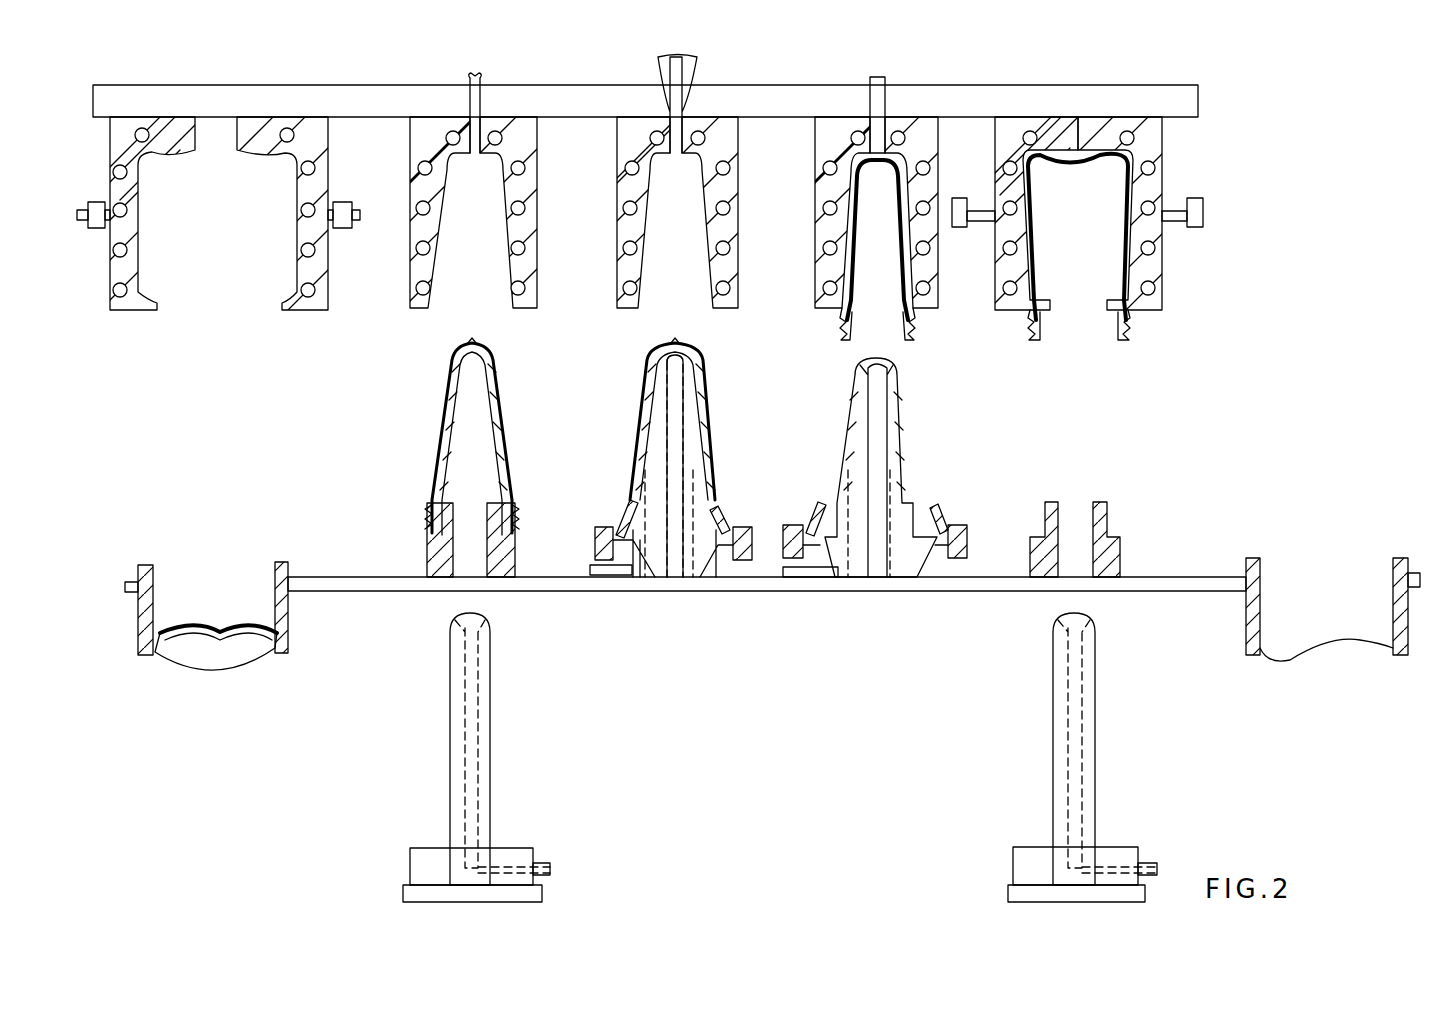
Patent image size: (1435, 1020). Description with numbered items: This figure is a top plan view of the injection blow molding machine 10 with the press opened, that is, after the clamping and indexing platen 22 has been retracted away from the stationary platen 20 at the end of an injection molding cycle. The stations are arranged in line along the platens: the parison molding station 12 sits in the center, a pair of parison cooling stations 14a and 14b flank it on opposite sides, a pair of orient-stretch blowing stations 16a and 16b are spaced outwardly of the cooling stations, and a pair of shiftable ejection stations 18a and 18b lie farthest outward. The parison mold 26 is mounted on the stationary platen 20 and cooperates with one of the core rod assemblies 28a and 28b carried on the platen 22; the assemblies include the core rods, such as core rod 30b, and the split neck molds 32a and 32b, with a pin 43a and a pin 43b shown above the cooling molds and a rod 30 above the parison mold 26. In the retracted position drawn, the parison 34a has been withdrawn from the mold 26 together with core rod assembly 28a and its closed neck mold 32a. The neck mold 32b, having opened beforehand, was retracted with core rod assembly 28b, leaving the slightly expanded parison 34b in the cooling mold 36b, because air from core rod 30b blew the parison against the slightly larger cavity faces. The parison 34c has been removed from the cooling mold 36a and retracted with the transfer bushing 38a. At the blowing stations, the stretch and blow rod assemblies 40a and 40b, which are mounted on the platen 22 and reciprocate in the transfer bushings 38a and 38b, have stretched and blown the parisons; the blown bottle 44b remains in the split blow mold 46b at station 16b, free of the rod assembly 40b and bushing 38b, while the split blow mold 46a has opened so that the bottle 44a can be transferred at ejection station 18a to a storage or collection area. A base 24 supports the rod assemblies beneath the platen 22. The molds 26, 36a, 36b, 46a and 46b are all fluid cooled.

The injection blow molding machine 10 is at (838, 74).
The parison molding station 12 is at (730, 82).
The parison cooling station 14a is at (466, 84).
The parison cooling station 14b is at (940, 85).
The orient-stretch blowing station 16a is at (217, 84).
The orient-stretch blowing station 16b is at (1098, 86).
The ejection station 18a is at (153, 568).
The ejection station 18b is at (1393, 590).
The stationary platen 20 is at (1045, 84).
The clamping and indexing platen 22 is at (562, 585).
The base 24 is at (1008, 896).
The parison mold 26 is at (738, 238).
The core rod assembly 28a is at (697, 580).
The core rod assembly 28b is at (908, 578).
The core rod 30 is at (692, 60).
The core rod 30b is at (895, 457).
The split neck mold 32a is at (733, 520).
The split neck mold 32b is at (955, 522).
The parison 34a is at (705, 403).
The parison 34b is at (918, 332).
The parison 34c is at (500, 413).
The cooling mold 36a is at (520, 206).
The cooling mold 36b is at (928, 180).
The transfer bushing 38a is at (513, 550).
The transfer bushing 38b is at (1105, 542).
The stretch and blow rod assembly 40a is at (483, 760).
The stretch and blow rod assembly 40b is at (1087, 726).
The pin 43a is at (481, 80).
The pin 43b is at (886, 80).
The bottle 44a is at (243, 668).
The bottle 44b is at (1112, 330).
The blow mold 46a is at (320, 277).
The blow mold 46b is at (1162, 172).